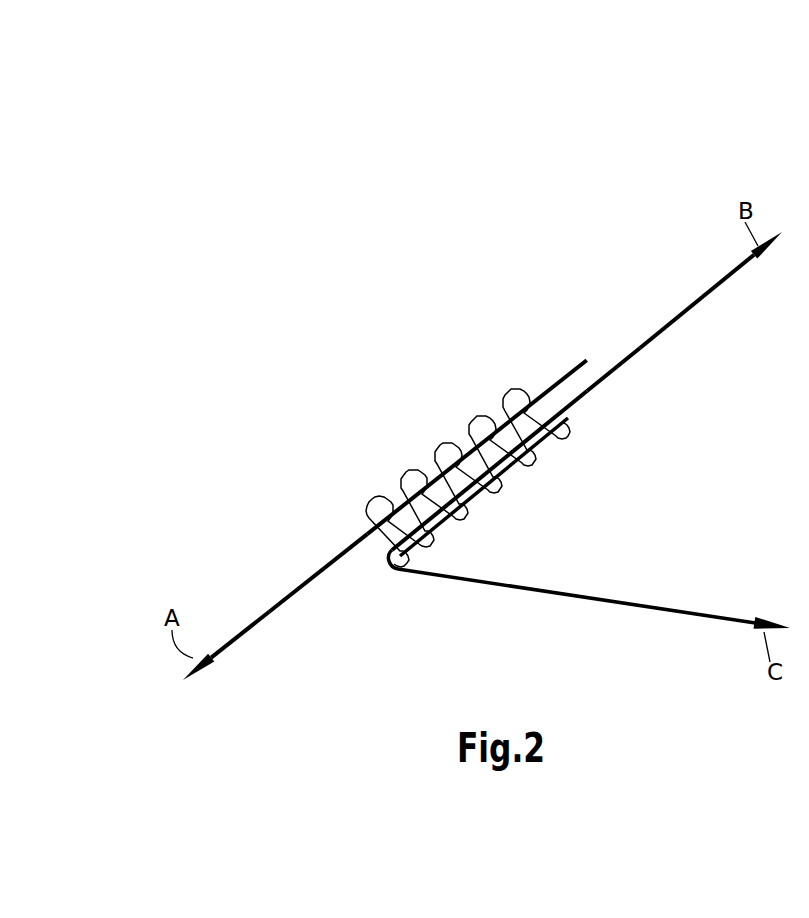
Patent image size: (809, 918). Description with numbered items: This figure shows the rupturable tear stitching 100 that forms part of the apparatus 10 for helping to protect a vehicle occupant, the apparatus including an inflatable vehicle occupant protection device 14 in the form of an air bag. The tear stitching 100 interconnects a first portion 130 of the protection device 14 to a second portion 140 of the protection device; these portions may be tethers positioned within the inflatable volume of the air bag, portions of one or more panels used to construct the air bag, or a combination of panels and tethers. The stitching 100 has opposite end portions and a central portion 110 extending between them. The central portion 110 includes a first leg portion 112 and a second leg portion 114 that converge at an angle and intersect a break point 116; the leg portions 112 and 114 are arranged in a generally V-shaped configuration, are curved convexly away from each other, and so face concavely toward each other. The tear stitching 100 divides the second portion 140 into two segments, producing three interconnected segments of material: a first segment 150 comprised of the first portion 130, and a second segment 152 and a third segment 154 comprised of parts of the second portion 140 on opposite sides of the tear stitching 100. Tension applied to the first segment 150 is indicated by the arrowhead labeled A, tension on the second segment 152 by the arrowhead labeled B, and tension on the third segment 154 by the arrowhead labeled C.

The apparatus 10 is at (497, 322).
The inflatable vehicle occupant protection device 14 is at (472, 305).
The tear stitching 100 is at (437, 460).
The central portion 110 is at (452, 433).
The first leg portion 112 is at (493, 490).
The second leg portion 114 is at (489, 470).
The break point 116 is at (382, 548).
The first portion 130 is at (280, 603).
The second portion 140 is at (653, 337).
The first segment 150 is at (250, 630).
The second segment 152 is at (613, 370).
The third segment 154 is at (570, 600).